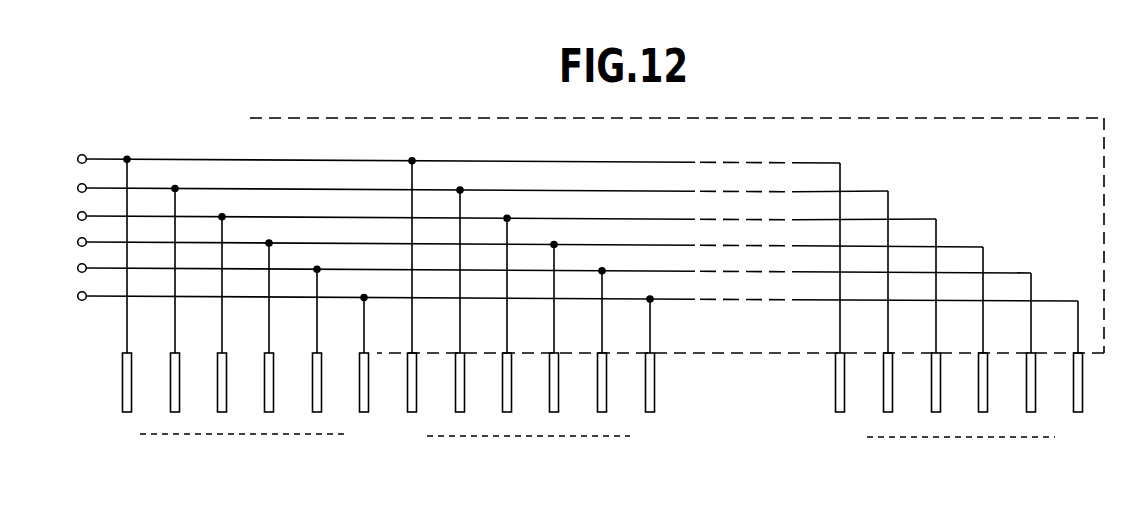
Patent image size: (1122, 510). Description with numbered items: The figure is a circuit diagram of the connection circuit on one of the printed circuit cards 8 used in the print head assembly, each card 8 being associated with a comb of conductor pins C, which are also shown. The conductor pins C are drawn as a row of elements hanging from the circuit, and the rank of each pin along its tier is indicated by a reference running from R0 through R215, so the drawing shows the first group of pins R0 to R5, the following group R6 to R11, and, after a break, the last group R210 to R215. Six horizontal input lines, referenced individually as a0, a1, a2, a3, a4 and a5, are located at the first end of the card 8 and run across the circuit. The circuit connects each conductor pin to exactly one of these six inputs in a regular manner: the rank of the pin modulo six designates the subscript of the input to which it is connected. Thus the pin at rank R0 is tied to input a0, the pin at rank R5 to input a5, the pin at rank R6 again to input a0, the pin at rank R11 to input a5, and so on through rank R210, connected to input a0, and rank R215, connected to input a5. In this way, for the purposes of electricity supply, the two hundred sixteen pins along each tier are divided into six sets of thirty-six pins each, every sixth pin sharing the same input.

The card 8 is at (948, 167).
The conductor pins C is at (217, 399).
The input a0 is at (445, 245).
The input a1 is at (469, 260).
The input a2 is at (493, 274).
The input a3 is at (517, 287).
The input a4 is at (541, 300).
The input a5 is at (564, 314).
The rank reference R0 is at (125, 399).
The rank reference R5 is at (360, 399).
The rank reference R6 is at (412, 399).
The rank reference R11 is at (649, 399).
The rank reference R210 is at (845, 399).
The rank reference R215 is at (1080, 399).